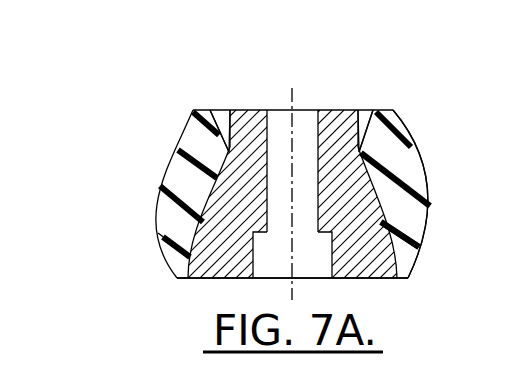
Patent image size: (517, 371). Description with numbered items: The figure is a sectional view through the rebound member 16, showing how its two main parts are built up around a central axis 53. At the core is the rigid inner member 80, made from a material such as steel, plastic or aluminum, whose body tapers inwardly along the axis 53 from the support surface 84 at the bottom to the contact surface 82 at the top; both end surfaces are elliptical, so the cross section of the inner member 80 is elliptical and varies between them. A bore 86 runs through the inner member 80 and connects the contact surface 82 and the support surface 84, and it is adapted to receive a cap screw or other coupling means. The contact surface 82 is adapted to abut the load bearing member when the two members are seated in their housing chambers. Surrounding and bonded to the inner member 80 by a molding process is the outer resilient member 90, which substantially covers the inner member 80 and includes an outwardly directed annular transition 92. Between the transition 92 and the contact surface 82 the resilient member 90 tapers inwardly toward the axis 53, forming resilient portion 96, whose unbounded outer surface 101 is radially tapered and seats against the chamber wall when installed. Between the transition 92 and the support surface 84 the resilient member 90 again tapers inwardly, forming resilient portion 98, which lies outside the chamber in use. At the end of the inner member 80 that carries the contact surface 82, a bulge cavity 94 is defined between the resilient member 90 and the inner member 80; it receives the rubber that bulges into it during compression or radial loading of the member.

The rebound member 16 is at (148, 288).
The axis 53 is at (294, 92).
The rigid inner member 80 is at (364, 121).
The contact surface 82 is at (250, 110).
The support surface 84 is at (365, 278).
The bore 86 is at (267, 110).
The outer resilient member 90 is at (178, 172).
The annular transition 92 is at (433, 194).
The bulge cavity 94 is at (218, 127).
The resilient portion 96 is at (413, 150).
The resilient portion 98 is at (425, 246).
The unbounded outer surface 101 is at (186, 130).